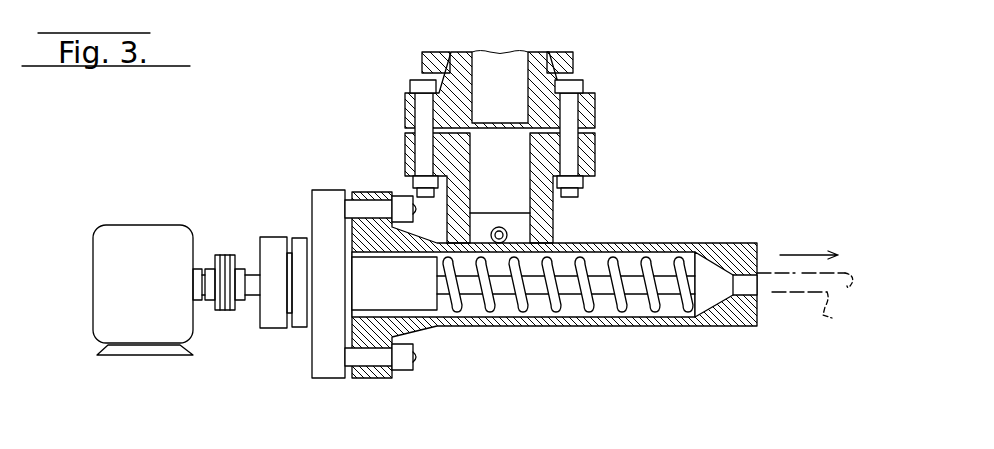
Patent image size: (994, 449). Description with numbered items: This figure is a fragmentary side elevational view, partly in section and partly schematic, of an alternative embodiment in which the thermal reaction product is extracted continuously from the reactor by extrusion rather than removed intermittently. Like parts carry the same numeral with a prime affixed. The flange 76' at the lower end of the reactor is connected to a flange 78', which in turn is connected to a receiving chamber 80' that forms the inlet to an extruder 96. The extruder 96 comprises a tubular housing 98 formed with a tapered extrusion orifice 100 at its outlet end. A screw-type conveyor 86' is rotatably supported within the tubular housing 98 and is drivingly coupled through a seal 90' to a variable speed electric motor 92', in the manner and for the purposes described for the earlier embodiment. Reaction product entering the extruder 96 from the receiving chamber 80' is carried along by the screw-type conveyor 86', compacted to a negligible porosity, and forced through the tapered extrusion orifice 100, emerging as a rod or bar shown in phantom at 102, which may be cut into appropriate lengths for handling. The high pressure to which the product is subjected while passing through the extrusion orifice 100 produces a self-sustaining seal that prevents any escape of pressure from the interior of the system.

The flange 76' is at (459, 124).
The flange 78' is at (464, 188).
The receiving chamber 80' is at (546, 222).
The extruder 96 is at (650, 242).
The screw-type conveyor 86' is at (566, 313).
The tubular housing 98 is at (508, 322).
The tapered extrusion orifice 100 is at (755, 283).
The rod or bar 102 is at (814, 292).
The seal 90' is at (263, 311).
The variable speed electric motor 92' is at (143, 267).